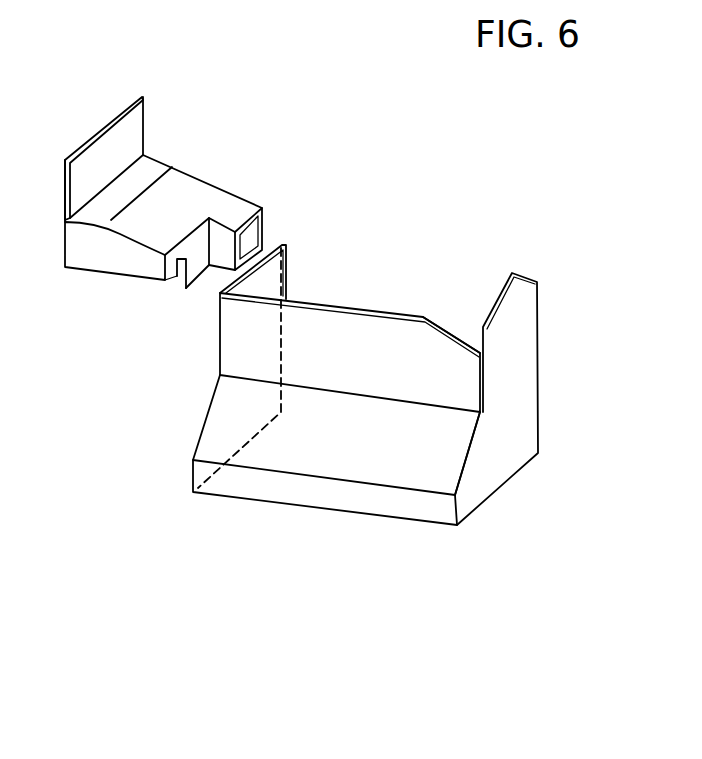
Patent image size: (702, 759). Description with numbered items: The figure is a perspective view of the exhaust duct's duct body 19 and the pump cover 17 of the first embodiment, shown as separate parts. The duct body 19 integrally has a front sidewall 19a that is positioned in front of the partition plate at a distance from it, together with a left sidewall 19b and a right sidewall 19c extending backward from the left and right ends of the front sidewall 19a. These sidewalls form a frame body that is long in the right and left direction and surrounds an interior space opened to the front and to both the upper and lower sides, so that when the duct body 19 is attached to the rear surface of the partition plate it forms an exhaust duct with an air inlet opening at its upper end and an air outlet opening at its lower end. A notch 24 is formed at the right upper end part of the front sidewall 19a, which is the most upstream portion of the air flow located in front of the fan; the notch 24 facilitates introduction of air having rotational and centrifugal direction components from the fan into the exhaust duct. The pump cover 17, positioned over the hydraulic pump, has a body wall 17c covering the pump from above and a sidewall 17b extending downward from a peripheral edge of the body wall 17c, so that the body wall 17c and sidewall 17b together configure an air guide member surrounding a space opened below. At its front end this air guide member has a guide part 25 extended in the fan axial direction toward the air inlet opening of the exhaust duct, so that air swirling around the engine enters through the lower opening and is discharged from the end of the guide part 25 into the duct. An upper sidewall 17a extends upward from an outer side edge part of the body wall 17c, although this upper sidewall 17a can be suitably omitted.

The pump cover 17 is at (191, 212).
The upper sidewall 17a is at (105, 129).
The sidewall 17b is at (180, 270).
The body wall 17c is at (162, 192).
The guide part 25 is at (263, 222).
The duct body 19 is at (365, 435).
The front sidewall 19a is at (335, 462).
The left sidewall 19b is at (238, 422).
The right sidewall 19c is at (503, 455).
The notch 24 is at (467, 328).